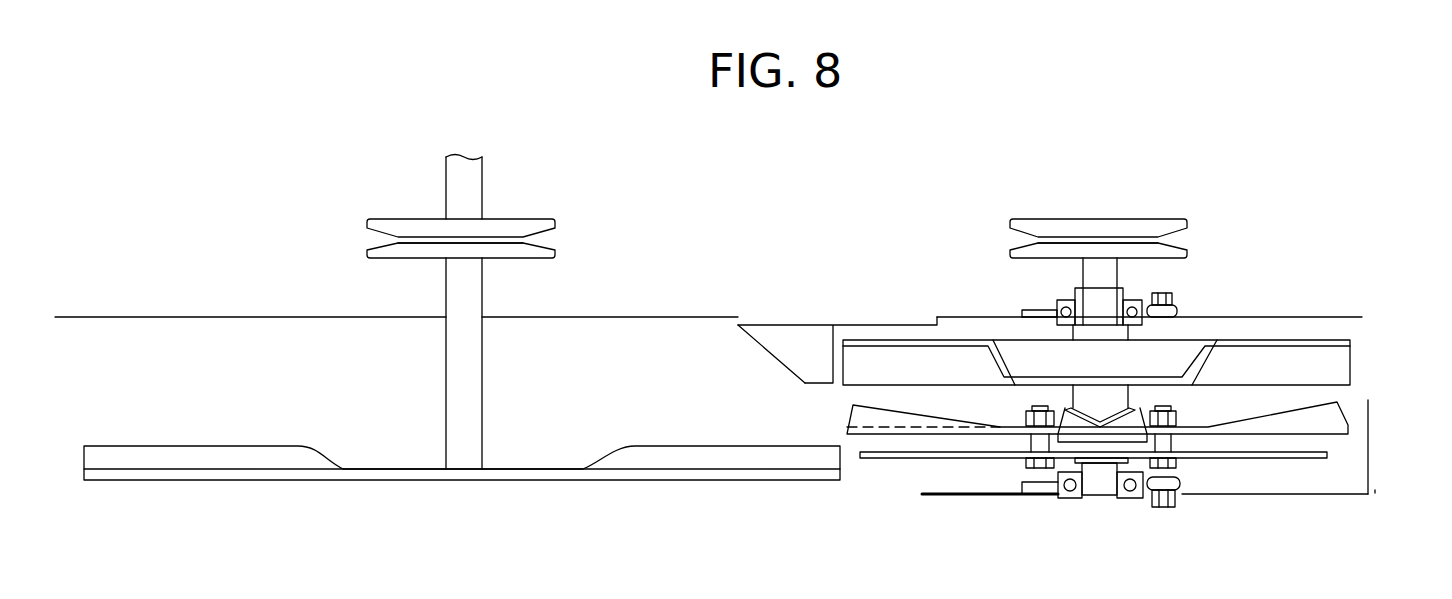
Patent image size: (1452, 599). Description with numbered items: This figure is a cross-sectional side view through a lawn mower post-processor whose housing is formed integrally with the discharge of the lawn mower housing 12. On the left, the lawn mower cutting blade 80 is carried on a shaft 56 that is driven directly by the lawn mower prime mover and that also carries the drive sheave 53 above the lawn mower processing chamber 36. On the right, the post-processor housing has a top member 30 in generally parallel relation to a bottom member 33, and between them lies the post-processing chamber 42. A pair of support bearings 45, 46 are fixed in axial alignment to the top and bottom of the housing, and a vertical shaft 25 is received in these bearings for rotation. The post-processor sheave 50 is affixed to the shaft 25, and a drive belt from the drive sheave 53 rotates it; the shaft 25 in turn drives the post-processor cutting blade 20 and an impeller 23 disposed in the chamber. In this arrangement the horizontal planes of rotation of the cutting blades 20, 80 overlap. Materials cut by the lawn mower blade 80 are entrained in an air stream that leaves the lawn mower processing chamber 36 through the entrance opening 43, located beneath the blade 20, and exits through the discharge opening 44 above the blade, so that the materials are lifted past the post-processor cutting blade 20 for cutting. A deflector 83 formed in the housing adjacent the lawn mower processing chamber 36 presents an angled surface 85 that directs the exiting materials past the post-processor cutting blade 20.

The lawn mower housing 12 is at (156, 318).
The cutting blade 20 is at (915, 458).
The impeller 23 is at (1292, 360).
The vertical shaft 25 is at (1120, 278).
The top member 30 is at (1252, 318).
The bottom member 33 is at (987, 495).
The lawn mower processing chamber 36 is at (572, 363).
The post-processing chamber 42 is at (1268, 477).
The entrance opening 43 is at (885, 477).
The discharge opening 44 is at (1368, 350).
The support bearing 45 is at (1088, 500).
The support bearing 46 is at (1075, 297).
The post-processor sheave 50 is at (1135, 219).
The drive sheave 53 is at (527, 219).
The shaft 56 is at (472, 193).
The lawn mower cutting blade 80 is at (743, 460).
The deflector 83 is at (793, 340).
The angled surface 85 is at (773, 357).